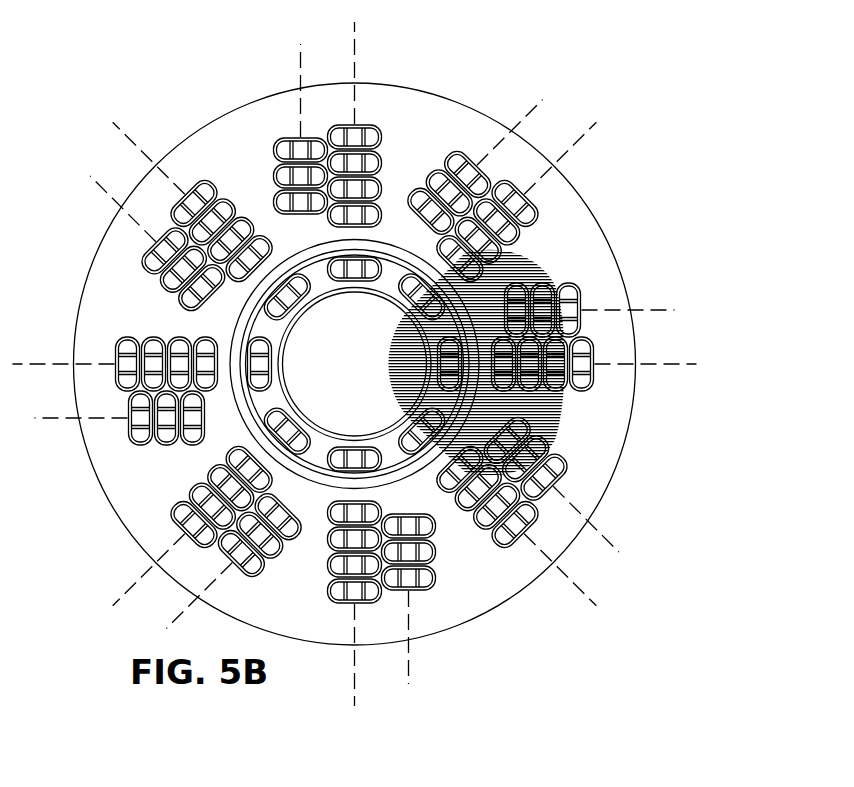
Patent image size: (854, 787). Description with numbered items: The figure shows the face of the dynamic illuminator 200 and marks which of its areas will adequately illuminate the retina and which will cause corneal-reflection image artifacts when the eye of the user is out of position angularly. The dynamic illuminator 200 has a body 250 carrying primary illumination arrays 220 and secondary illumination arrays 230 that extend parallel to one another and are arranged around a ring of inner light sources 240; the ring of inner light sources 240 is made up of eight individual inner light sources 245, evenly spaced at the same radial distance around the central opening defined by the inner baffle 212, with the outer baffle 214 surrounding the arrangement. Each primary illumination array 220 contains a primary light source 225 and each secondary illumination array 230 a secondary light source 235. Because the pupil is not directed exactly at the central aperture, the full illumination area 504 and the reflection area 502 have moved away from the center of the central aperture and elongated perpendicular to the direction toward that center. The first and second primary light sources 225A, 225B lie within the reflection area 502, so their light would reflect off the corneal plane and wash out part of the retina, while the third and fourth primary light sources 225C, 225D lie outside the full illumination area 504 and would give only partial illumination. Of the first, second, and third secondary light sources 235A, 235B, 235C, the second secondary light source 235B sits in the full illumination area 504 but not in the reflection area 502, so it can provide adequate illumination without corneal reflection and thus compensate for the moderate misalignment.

The dynamic illuminator 200 is at (137, 87).
The inner baffle 212 is at (412, 468).
The outer baffle 214 is at (291, 471).
The primary illumination arrays 220 is at (371, 100).
The primary light source 225 is at (398, 134).
The first primary light source 225A is at (518, 410).
The second primary light source 225B is at (548, 408).
The third primary light source 225C is at (575, 405).
The fourth primary light source 225D is at (610, 382).
The secondary illumination arrays 230 is at (134, 239).
The secondary light source 235 is at (131, 278).
The first secondary light source 235A is at (514, 272).
The second secondary light source 235B is at (541, 272).
The third secondary light source 235C is at (569, 272).
The ring of inner light sources 240 is at (257, 405).
The inner light source 245 is at (238, 343).
The body 250 is at (370, 116).
The reflection area 502 is at (420, 321).
The full illumination area 504 is at (421, 392).